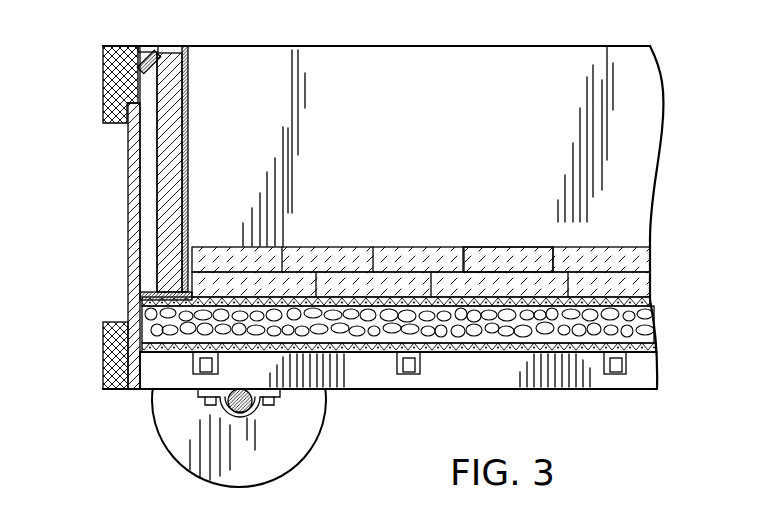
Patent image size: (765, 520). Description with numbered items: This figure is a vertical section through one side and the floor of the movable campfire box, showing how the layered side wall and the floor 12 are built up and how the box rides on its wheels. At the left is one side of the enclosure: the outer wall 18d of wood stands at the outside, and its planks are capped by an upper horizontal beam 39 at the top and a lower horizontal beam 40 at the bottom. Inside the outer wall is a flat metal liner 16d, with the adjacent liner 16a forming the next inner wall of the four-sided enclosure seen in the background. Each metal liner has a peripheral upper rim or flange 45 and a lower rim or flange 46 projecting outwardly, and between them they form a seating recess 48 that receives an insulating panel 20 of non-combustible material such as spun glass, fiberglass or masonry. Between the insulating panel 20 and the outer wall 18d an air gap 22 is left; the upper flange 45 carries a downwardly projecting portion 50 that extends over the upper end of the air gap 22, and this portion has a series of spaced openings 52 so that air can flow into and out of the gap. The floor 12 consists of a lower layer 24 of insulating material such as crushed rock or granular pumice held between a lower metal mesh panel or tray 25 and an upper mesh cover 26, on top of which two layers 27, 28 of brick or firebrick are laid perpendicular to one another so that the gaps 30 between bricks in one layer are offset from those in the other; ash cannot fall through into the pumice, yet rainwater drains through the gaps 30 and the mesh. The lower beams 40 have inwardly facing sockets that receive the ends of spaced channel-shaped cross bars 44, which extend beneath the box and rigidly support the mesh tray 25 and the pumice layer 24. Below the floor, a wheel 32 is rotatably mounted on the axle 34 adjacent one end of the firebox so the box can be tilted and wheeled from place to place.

The closed floor 12 is at (622, 232).
The flat metal panel or liner 16a is at (417, 75).
The flat metal panel or liner 16d is at (187, 145).
The outer wall 18d is at (133, 160).
The insulating panel 20 is at (172, 178).
The air gap 22 is at (147, 225).
The lower layer of insulating material 24 is at (645, 326).
The metal mesh panel or tray 25 is at (648, 353).
The upper mesh panel or cover 26 is at (618, 298).
The layer of brick 27 is at (357, 283).
The layer of brick 28 is at (568, 243).
The gaps between bricks 30 is at (375, 258).
The wheel 32 is at (193, 455).
The axle 34 is at (222, 404).
The upper horizontal beam 39 is at (104, 81).
The lower horizontal beam 40 is at (105, 343).
The cross bar 44 is at (398, 358).
The upper rim or flange 45 is at (186, 46).
The lower rim or flange 46 is at (157, 296).
The seating recess 48 is at (157, 205).
The downwardly projecting portion 50 is at (151, 48).
The spaced openings 52 is at (142, 49).